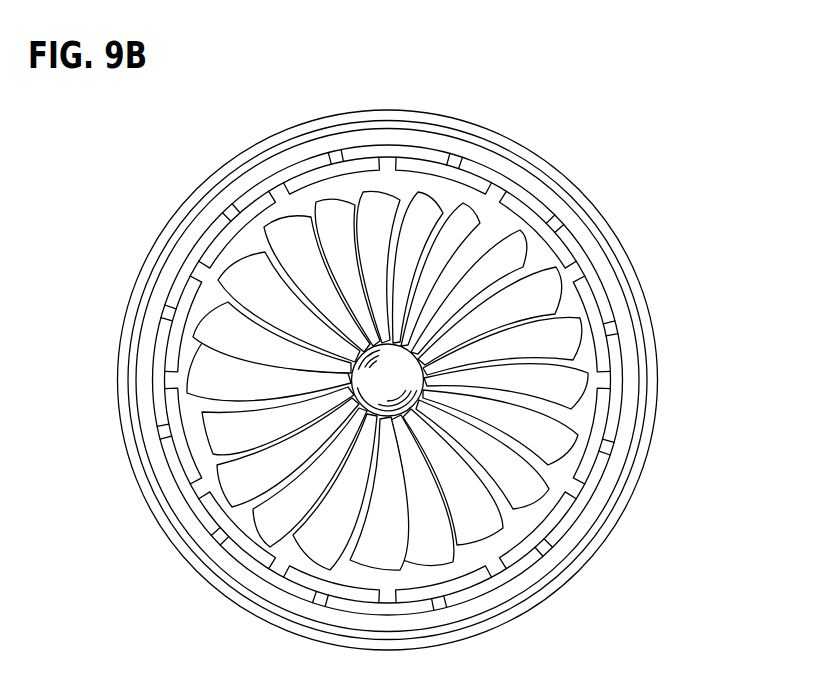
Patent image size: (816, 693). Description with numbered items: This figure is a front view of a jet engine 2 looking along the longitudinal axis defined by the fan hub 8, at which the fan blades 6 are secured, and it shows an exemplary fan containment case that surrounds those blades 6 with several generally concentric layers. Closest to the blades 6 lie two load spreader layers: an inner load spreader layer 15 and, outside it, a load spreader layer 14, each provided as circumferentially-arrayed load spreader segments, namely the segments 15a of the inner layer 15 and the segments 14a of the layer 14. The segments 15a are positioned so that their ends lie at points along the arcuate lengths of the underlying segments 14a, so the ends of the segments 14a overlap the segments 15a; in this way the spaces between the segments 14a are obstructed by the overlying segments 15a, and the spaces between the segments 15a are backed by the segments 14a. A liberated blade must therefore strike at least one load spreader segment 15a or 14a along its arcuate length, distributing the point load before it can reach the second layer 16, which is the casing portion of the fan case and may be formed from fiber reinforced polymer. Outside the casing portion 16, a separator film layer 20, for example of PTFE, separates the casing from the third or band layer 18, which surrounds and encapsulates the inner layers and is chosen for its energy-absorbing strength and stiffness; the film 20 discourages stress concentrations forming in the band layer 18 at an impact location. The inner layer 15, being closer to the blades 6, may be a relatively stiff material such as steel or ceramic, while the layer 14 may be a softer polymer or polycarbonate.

The engine 2 is at (605, 142).
The blades 6 is at (540, 303).
The fan hub 8 is at (423, 390).
The load spreader layer 14 is at (493, 187).
The load spreader segments 14a is at (152, 395).
The load spreader layer 15 is at (232, 228).
The load spreader segments 15a is at (178, 452).
The second layer 16 is at (462, 150).
The third layer 18 is at (390, 122).
The separator film layer 20 is at (322, 133).